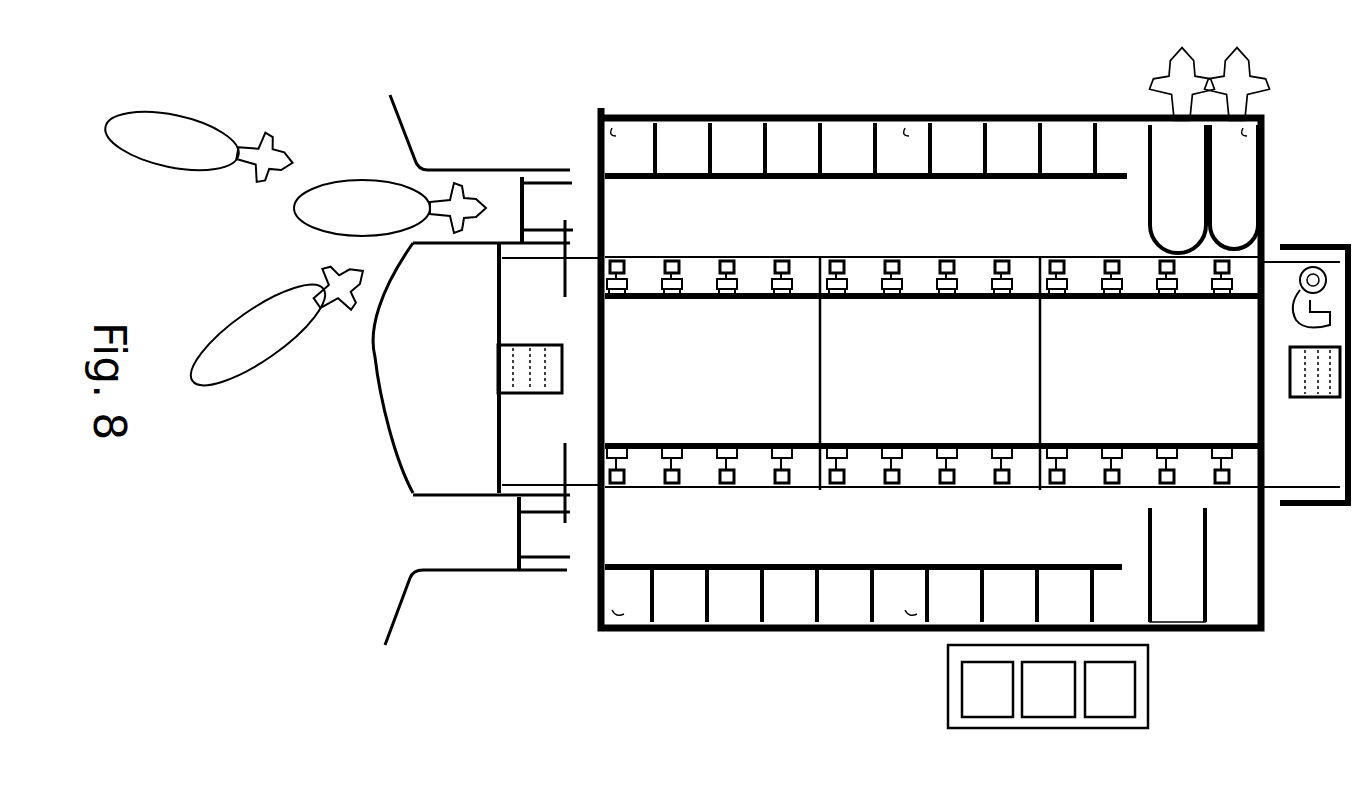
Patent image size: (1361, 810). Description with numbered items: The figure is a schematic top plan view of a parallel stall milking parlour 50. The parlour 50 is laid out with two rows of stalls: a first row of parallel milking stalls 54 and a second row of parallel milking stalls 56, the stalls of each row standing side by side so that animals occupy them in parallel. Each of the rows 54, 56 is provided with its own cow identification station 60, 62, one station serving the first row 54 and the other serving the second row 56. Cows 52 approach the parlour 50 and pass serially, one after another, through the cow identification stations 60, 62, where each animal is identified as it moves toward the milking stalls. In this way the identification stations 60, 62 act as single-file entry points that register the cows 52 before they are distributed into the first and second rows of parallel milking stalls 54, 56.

The parallel stall milking parlour 50 is at (693, 658).
The cows 52 is at (183, 173).
The first row of parallel milking stalls 54 is at (1290, 215).
The second row of parallel milking stalls 56 is at (1283, 578).
The cow identification station 60 is at (533, 170).
The cow identification station 62 is at (517, 535).